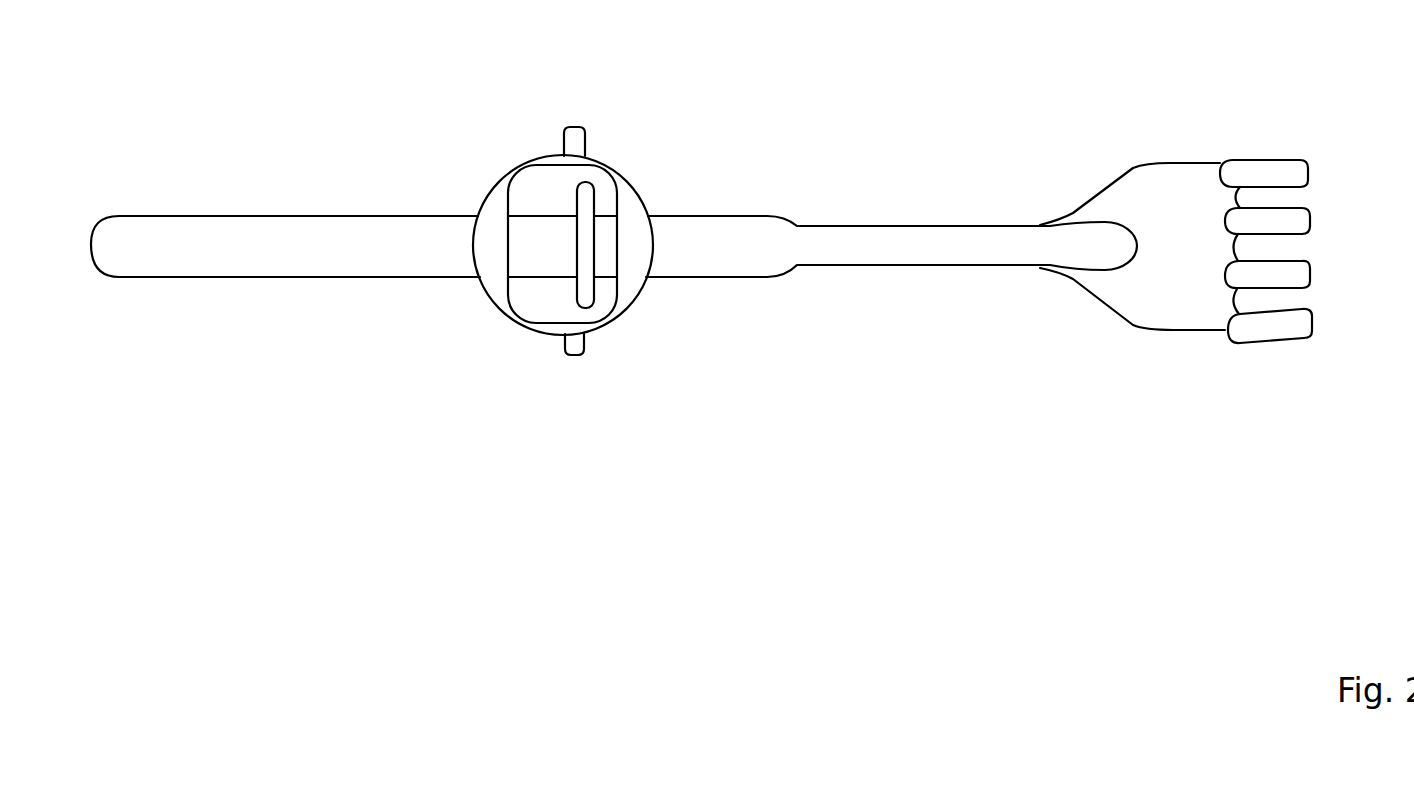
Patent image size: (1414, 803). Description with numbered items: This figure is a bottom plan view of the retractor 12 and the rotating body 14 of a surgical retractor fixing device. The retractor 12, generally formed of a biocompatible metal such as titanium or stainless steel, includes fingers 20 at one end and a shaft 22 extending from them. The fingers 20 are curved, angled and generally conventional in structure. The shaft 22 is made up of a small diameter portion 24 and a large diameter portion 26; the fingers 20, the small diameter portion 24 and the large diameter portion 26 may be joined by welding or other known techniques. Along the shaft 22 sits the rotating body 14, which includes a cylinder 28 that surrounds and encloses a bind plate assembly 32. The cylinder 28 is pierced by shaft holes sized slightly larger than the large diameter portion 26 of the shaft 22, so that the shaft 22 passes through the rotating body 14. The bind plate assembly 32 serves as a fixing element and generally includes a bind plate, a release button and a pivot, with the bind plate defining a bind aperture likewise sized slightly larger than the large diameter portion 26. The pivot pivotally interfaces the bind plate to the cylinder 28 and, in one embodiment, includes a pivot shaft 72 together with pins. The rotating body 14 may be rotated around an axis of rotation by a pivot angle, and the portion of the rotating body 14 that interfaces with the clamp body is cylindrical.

The retractor 12 is at (717, 224).
The rotating body 14 is at (600, 165).
The fingers 20 is at (1250, 168).
The shaft 22 is at (768, 216).
The small diameter portion 24 is at (492, 185).
The large diameter portion 26 is at (677, 213).
The cylinder 28 is at (535, 156).
The bind plate assembly 32 is at (587, 292).
The pivot shaft 72 is at (575, 350).